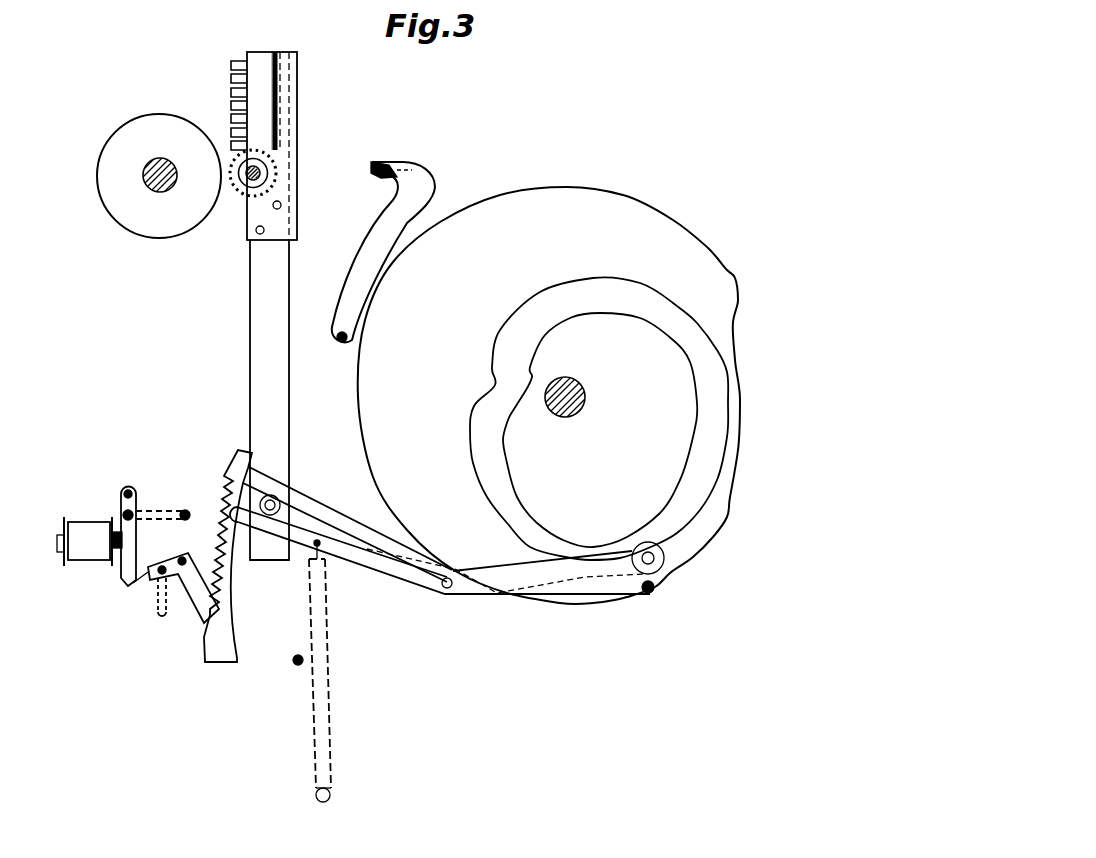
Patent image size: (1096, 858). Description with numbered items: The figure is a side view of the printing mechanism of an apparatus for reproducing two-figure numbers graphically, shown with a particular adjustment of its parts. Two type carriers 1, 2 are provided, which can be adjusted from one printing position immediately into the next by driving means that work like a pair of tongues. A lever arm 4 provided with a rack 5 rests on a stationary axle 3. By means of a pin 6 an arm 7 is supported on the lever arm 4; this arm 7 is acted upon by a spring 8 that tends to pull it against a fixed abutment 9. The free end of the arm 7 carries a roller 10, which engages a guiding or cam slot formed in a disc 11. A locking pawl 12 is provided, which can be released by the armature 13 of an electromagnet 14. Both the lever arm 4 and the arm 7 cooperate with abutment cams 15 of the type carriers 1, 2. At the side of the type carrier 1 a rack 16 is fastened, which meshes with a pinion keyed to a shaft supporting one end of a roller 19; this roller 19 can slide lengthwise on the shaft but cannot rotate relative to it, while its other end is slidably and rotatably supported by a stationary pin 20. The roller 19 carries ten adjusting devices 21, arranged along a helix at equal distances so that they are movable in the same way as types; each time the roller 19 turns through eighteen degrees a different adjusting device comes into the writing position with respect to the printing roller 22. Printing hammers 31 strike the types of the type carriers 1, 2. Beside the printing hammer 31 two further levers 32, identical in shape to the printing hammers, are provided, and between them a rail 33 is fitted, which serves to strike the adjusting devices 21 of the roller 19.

The type carrier 1 is at (293, 306).
The type carrier 2 is at (272, 408).
The stationary axle 3 is at (648, 594).
The lever arm 4 is at (335, 525).
The rack 5 is at (222, 510).
The pin 6 is at (447, 590).
The arm 7 is at (368, 549).
The spring 8 is at (327, 698).
The fixed abutment 9 is at (296, 665).
The roller 10 is at (663, 556).
The disc 11 is at (386, 476).
The locking pawl 12 is at (200, 615).
The armature 13 is at (127, 584).
The electromagnet 14 is at (88, 540).
The abutment cams 15 is at (278, 496).
The rack 16 is at (289, 216).
The roller 19 is at (272, 179).
The stationary pin 20 is at (261, 173).
The adjusting devices 21 is at (247, 192).
The printing roller 22 is at (148, 130).
The printing hammers 31 is at (404, 232).
The levers 32 is at (407, 162).
The rail 33 is at (381, 178).